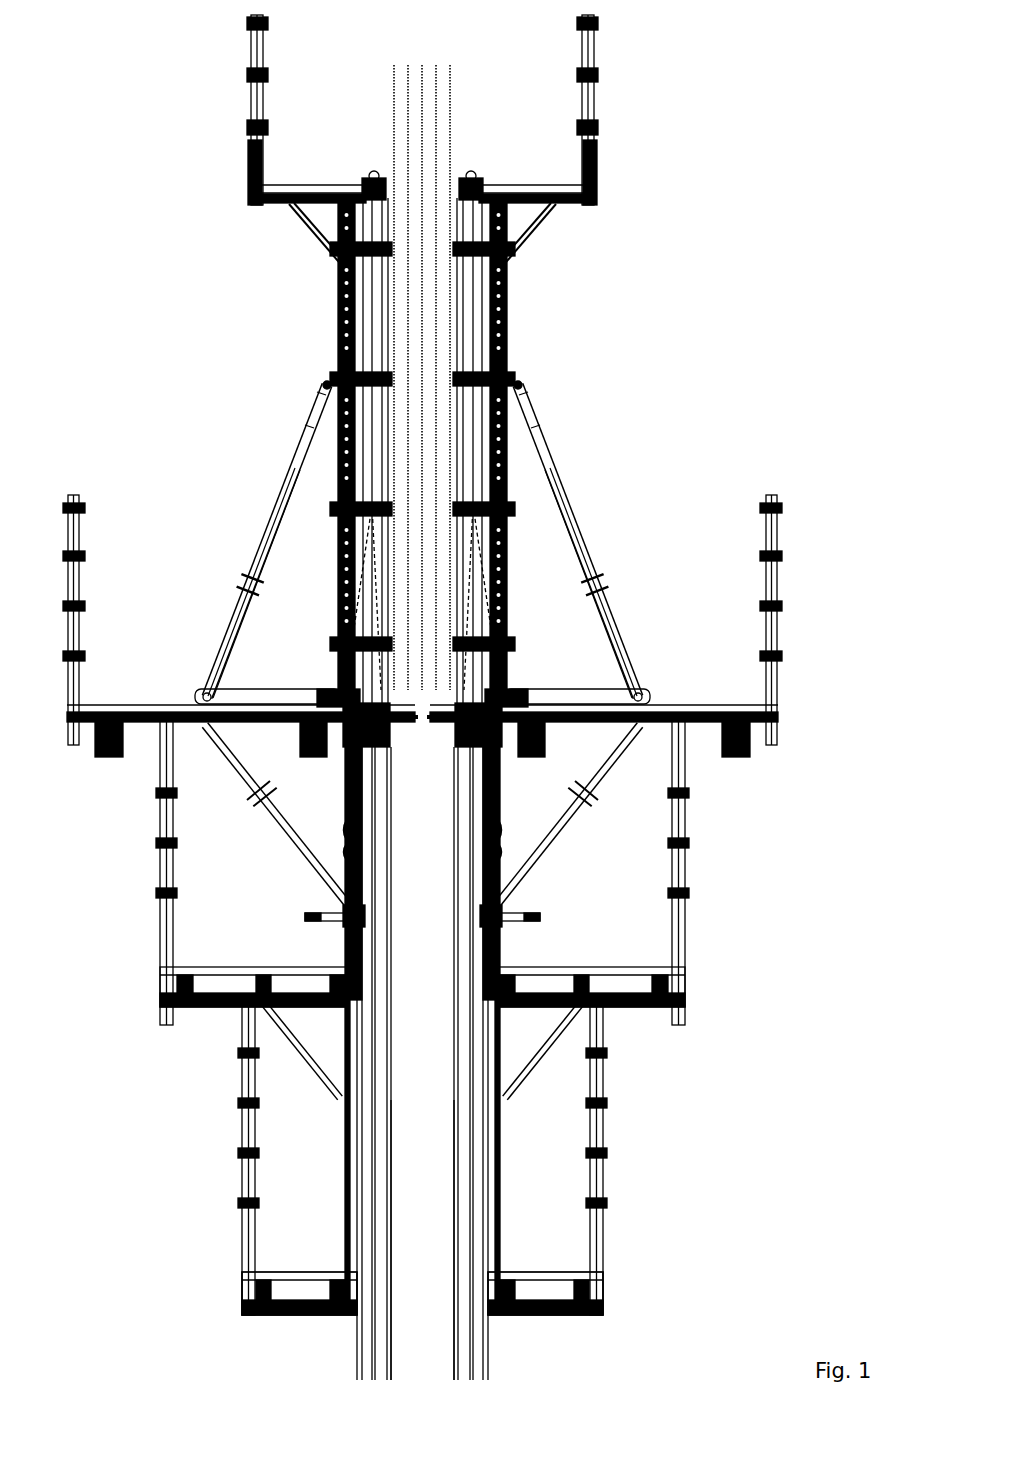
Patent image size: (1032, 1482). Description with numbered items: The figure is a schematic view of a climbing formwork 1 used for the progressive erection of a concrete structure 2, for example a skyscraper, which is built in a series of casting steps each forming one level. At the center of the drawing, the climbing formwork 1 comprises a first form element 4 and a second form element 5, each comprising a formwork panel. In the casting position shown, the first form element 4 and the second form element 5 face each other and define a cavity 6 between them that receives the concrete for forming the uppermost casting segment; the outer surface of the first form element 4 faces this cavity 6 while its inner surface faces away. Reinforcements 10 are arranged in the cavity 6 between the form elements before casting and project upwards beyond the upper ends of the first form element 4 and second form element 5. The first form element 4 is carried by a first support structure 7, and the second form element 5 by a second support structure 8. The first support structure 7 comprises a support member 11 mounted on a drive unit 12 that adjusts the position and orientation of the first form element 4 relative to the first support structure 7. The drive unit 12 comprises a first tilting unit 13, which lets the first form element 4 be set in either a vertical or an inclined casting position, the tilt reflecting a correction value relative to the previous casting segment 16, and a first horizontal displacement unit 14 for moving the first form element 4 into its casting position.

The climbing formwork 1 is at (152, 383).
The concrete structure 2 is at (422, 1267).
The first form element 4 is at (340, 330).
The second form element 5 is at (482, 328).
The cavity 6 is at (415, 270).
The first support structure 7 is at (325, 496).
The second support structure 8 is at (510, 478).
The reinforcements 10 is at (455, 115).
The support member 11 is at (340, 268).
The drive unit 12 is at (220, 615).
The first tilting unit 13 is at (233, 566).
The first horizontal displacement unit 14 is at (258, 700).
The previous casting segment 16 is at (418, 1118).